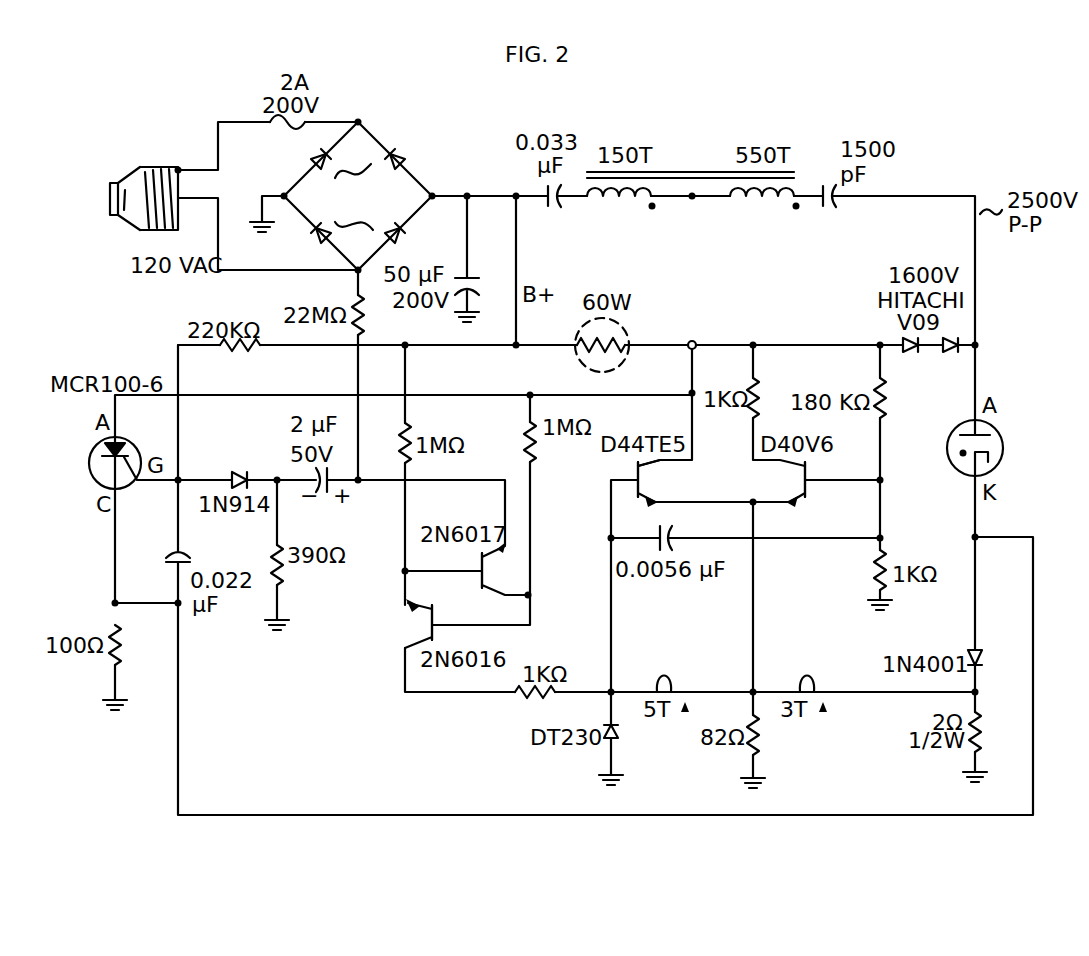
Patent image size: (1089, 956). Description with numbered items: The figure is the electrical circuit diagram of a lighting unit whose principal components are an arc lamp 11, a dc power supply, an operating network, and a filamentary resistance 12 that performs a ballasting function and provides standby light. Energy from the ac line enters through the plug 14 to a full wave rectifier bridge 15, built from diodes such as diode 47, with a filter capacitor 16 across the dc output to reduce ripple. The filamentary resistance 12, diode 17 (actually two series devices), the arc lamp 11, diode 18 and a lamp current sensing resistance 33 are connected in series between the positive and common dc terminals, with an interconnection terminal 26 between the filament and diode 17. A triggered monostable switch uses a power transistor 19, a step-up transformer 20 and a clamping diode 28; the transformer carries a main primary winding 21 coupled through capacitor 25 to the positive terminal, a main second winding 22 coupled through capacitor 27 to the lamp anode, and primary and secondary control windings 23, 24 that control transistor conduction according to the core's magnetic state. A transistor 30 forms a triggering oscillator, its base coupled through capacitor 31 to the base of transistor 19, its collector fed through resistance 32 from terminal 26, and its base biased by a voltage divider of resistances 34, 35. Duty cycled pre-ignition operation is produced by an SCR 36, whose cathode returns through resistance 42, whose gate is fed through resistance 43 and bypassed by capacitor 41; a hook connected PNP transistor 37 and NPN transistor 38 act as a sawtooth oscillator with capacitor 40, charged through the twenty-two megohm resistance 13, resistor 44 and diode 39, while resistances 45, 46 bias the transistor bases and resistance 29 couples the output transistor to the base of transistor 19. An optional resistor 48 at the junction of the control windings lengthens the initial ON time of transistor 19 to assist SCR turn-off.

The arc lamp 11 is at (1004, 440).
The filamentary resistance 12 is at (620, 325).
The resistance 13 is at (353, 296).
The plug 14 is at (156, 166).
The full wave rectifier bridge 15 is at (403, 133).
The filter capacitor 16 is at (460, 267).
The diode 17 is at (928, 352).
The diode 18 is at (983, 650).
The power transistor 19 is at (650, 480).
The step-up transformer 20 is at (704, 134).
The main primary winding 21 is at (614, 212).
The main second winding 22 is at (759, 212).
The primary control winding 23 is at (805, 679).
The secondary control winding 24 is at (675, 680).
The capacitor 25 is at (554, 212).
The interconnection terminal 26 is at (695, 343).
The capacitor 27 is at (830, 212).
The clamping diode 28 is at (618, 738).
The resistance 29 is at (521, 698).
The transistor 30 is at (790, 478).
The capacitor 31 is at (674, 530).
The resistance 32 is at (760, 383).
The lamp current sensing resistance 33 is at (983, 722).
The resistance 34 is at (890, 400).
The resistance 35 is at (888, 552).
The SCR 36 is at (88, 464).
The PNP transistor 37 is at (478, 560).
The NPN transistor 38 is at (437, 612).
The diode 39 is at (234, 472).
The capacitor 40 is at (324, 498).
The capacitor 41 is at (172, 549).
The resistance 42 is at (108, 659).
The resistance 43 is at (245, 353).
The resistor 44 is at (283, 574).
The resistance 45 is at (410, 426).
The resistance 46 is at (526, 448).
The diode 47 is at (321, 158).
The resistor 48 is at (763, 745).